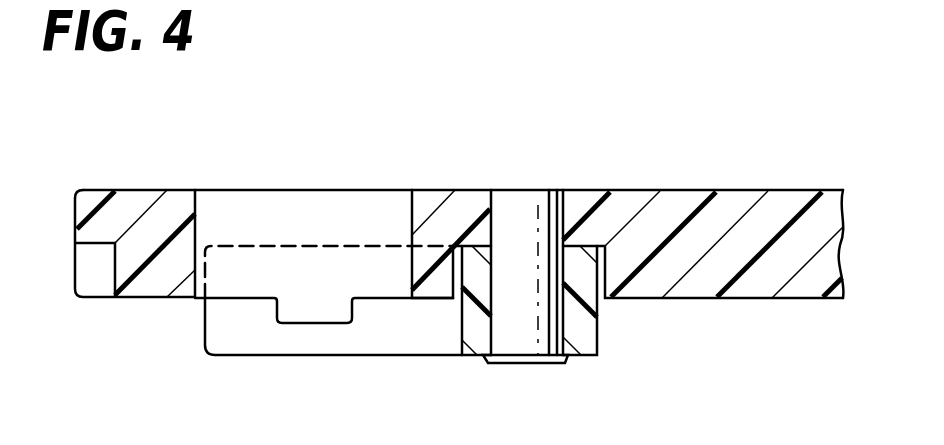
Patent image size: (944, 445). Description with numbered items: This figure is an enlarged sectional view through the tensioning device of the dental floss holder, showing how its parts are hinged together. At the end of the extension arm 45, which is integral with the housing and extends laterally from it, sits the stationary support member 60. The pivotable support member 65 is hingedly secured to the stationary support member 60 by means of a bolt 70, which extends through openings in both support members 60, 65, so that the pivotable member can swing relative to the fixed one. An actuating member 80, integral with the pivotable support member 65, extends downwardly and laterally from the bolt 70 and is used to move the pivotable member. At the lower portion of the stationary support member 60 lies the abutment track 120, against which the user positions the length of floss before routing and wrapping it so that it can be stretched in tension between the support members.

The extension arm 45 is at (690, 200).
The stationary support member 60 is at (178, 202).
The pivotable support member 65 is at (583, 340).
The bolt 70 is at (535, 200).
The actuating member 80 is at (348, 345).
The abutment track 120 is at (98, 285).